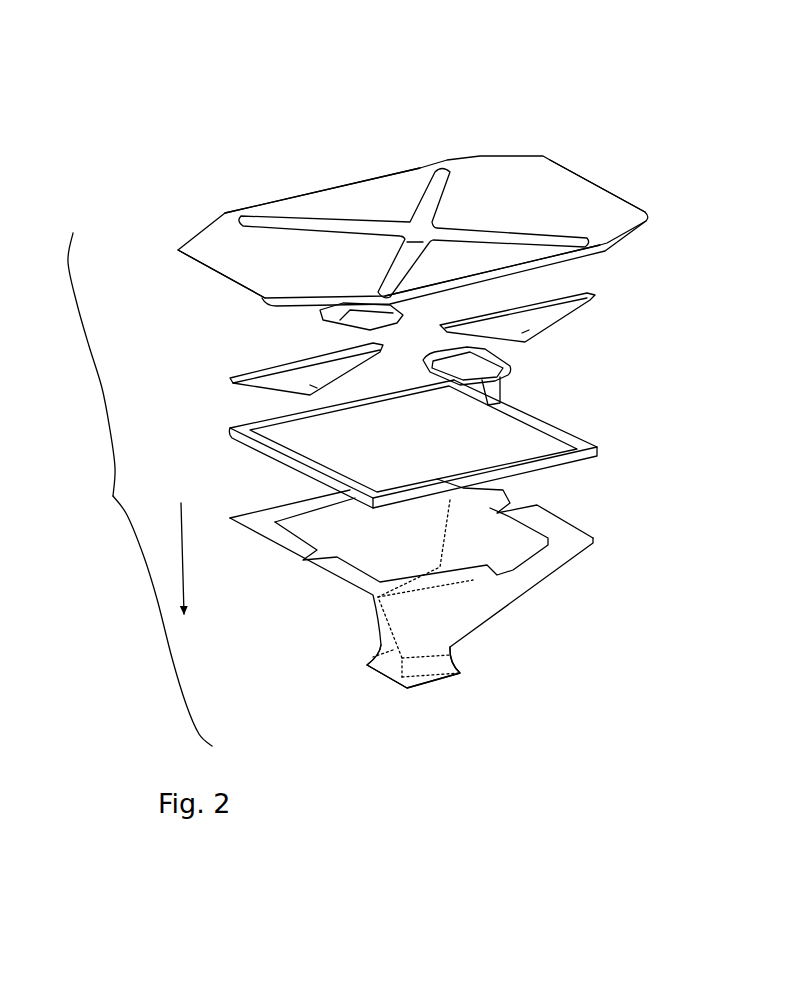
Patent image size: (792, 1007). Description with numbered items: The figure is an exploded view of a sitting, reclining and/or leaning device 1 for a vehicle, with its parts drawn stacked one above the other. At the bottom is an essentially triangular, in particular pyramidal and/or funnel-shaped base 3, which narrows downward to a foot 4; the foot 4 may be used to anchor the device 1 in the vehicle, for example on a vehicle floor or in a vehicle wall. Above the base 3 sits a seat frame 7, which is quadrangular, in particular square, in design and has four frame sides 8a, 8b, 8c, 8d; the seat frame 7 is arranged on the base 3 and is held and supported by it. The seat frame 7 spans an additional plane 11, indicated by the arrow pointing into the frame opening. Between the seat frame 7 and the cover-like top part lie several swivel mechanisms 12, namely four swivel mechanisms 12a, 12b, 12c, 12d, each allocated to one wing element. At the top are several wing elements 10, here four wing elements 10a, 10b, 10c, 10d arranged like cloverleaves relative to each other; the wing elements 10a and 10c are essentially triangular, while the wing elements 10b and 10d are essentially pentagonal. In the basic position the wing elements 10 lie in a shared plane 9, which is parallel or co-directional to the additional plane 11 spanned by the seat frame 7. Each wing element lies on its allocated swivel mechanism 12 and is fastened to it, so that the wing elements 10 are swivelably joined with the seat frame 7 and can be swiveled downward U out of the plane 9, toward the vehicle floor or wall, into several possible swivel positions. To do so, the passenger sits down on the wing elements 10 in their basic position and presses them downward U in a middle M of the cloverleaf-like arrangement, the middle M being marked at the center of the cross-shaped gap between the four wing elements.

The device 1 is at (140, 489).
The base 3 is at (582, 538).
The foot 4 is at (420, 667).
The seat frame 7 is at (577, 444).
The frame side 8a is at (270, 420).
The frame side 8b is at (280, 457).
The frame side 8c is at (513, 470).
The frame side 8d is at (527, 415).
The shared plane 9 is at (421, 215).
The wing elements 10 is at (172, 208).
The wing element 10a is at (360, 199).
The wing element 10b is at (257, 263).
The wing element 10c is at (463, 267).
The wing element 10d is at (568, 190).
The additional plane 11 is at (367, 435).
The swivel mechanisms 12 is at (633, 288).
The swivel mechanism 12a is at (360, 313).
The swivel mechanism 12b is at (287, 377).
The swivel mechanism 12c is at (475, 368).
The swivel mechanism 12d is at (522, 331).
The middle M is at (415, 232).
The downward U is at (173, 557).